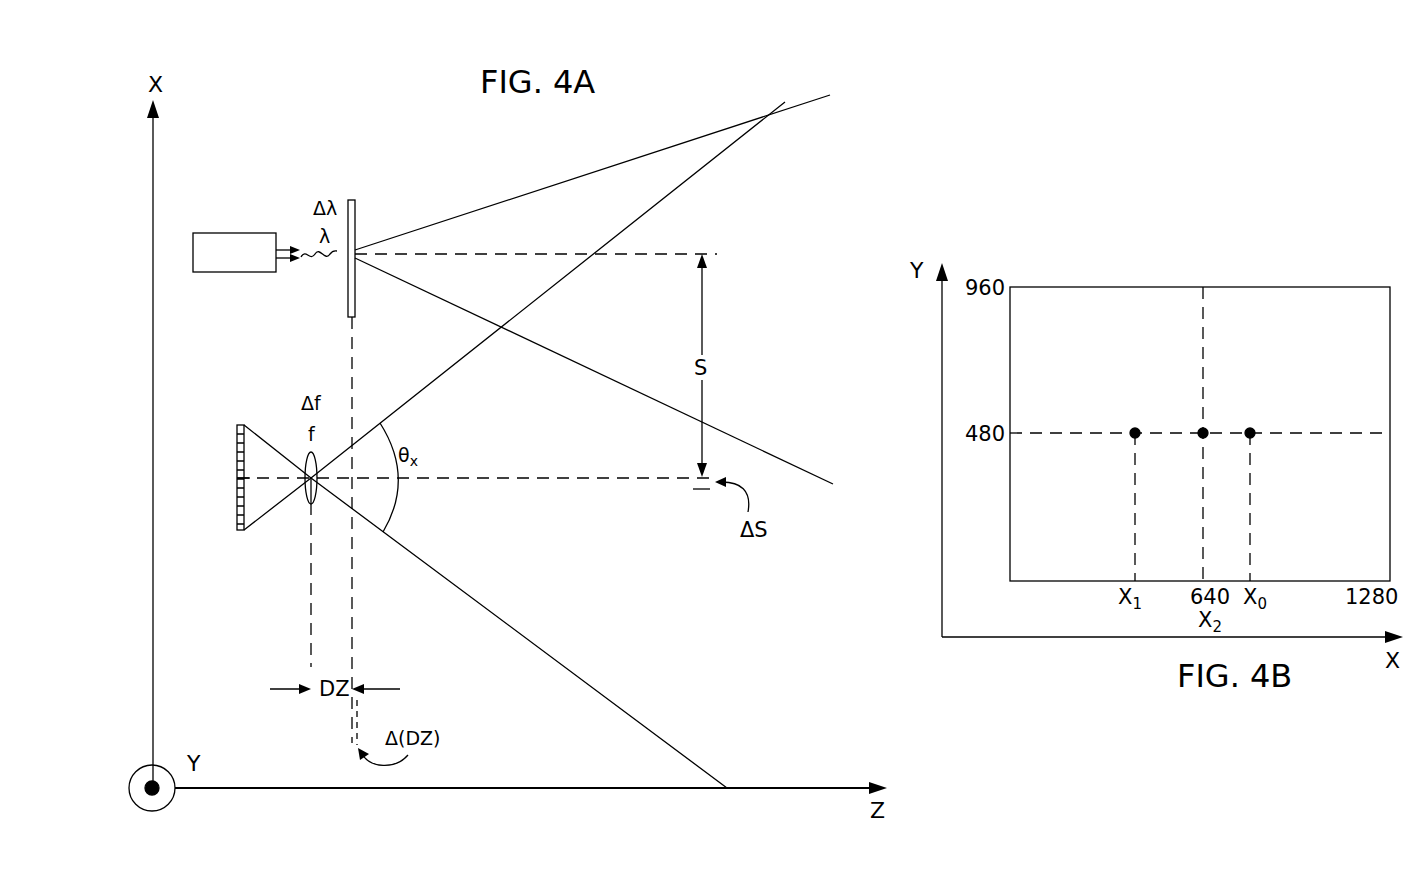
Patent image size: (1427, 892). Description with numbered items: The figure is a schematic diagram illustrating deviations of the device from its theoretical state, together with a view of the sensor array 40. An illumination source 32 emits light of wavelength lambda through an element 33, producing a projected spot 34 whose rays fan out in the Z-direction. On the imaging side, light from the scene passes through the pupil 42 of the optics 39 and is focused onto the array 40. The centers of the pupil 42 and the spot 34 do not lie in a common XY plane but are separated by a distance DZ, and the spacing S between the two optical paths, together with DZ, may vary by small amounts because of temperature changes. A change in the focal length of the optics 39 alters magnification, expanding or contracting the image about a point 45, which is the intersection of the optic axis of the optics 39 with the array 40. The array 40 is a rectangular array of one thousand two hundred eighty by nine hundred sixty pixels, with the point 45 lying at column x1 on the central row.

In FIG. 4A, the light source 32 is at (210, 233).
In FIG. 4A, the optical filter element 33 is at (348, 200).
In FIG. 4A, the spot 34 is at (355, 250).
In FIG. 4A, the optics 39 is at (300, 500).
In FIG. 4A, the array 40 is at (237, 510).
In FIG. 4B, the array 40 is at (1070, 287).
In FIG. 4A, the pupil 42 is at (305, 478).
In FIG. 4A, the point 45 is at (237, 478).
In FIG. 4B, the point 45 is at (1135, 433).